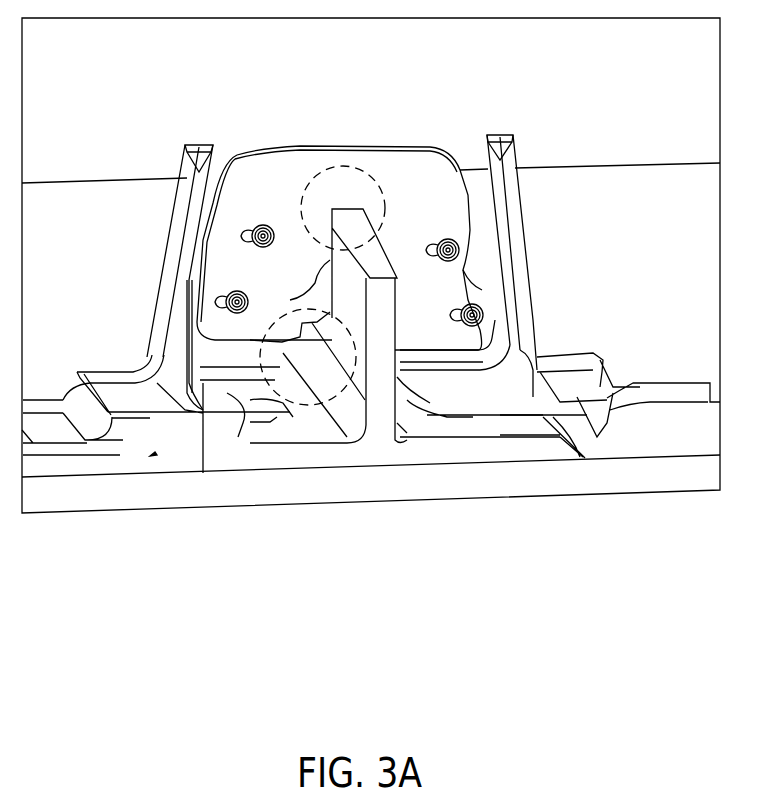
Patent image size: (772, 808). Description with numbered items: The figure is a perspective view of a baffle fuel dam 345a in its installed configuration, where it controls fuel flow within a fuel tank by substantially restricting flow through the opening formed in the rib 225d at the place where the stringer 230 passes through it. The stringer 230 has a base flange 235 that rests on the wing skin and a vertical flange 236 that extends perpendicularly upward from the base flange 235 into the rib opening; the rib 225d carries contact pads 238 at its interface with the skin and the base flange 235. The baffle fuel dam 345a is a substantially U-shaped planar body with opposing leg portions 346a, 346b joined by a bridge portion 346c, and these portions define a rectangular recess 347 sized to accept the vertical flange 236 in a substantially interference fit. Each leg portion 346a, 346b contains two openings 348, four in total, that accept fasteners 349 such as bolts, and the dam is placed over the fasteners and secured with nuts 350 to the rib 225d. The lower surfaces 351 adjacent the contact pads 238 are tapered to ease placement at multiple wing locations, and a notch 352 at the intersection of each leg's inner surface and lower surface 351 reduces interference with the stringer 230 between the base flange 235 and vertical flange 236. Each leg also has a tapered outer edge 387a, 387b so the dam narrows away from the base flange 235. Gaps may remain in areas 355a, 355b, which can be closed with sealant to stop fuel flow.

The rib 225d is at (700, 218).
The stringer 230 is at (160, 450).
The base flange 235 is at (467, 450).
The vertical flange 236 is at (383, 360).
The contact pads 238 is at (235, 400).
The baffle fuel dam 345a is at (342, 342).
The leg portion 346a is at (140, 280).
The leg portion 346b is at (545, 242).
The bridge portion 346c is at (290, 158).
The recess 347 is at (328, 270).
The openings 348 is at (250, 225).
The fasteners 349 is at (463, 248).
The nuts 350 is at (470, 185).
The lower surfaces 351 is at (203, 473).
The notch 352 is at (313, 350).
The area 355a is at (325, 168).
The area 355b is at (267, 400).
The tapered outer edge 387a is at (151, 183).
The tapered outer edge 387b is at (472, 217).